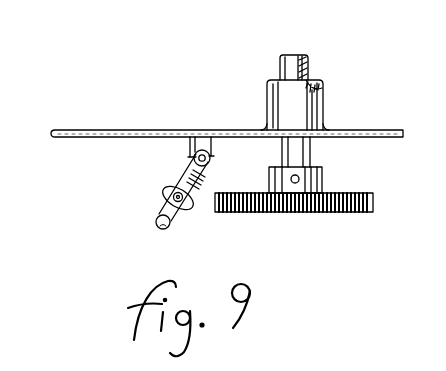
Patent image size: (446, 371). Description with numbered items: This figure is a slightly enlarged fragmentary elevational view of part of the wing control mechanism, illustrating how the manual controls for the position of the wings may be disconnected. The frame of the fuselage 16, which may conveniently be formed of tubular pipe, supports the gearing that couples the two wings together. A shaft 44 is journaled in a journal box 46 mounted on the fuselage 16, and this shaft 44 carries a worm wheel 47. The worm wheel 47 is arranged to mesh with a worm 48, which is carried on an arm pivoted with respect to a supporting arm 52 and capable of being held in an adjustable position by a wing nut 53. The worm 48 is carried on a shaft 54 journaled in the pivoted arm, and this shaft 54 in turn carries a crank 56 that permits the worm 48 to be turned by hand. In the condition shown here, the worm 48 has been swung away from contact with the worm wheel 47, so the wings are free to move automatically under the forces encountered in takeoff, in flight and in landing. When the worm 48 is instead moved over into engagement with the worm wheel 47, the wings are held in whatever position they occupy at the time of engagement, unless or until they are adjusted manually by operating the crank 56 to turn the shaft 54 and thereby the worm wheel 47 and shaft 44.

The fuselage 16 is at (121, 130).
The shaft 44 is at (301, 70).
The journal box 46 is at (275, 113).
The worm wheel 47 is at (346, 193).
The worm 48 is at (165, 192).
The supporting arm 52 is at (209, 162).
The wing nut 53 is at (192, 162).
The shaft 54 is at (181, 204).
The crank 56 is at (160, 229).